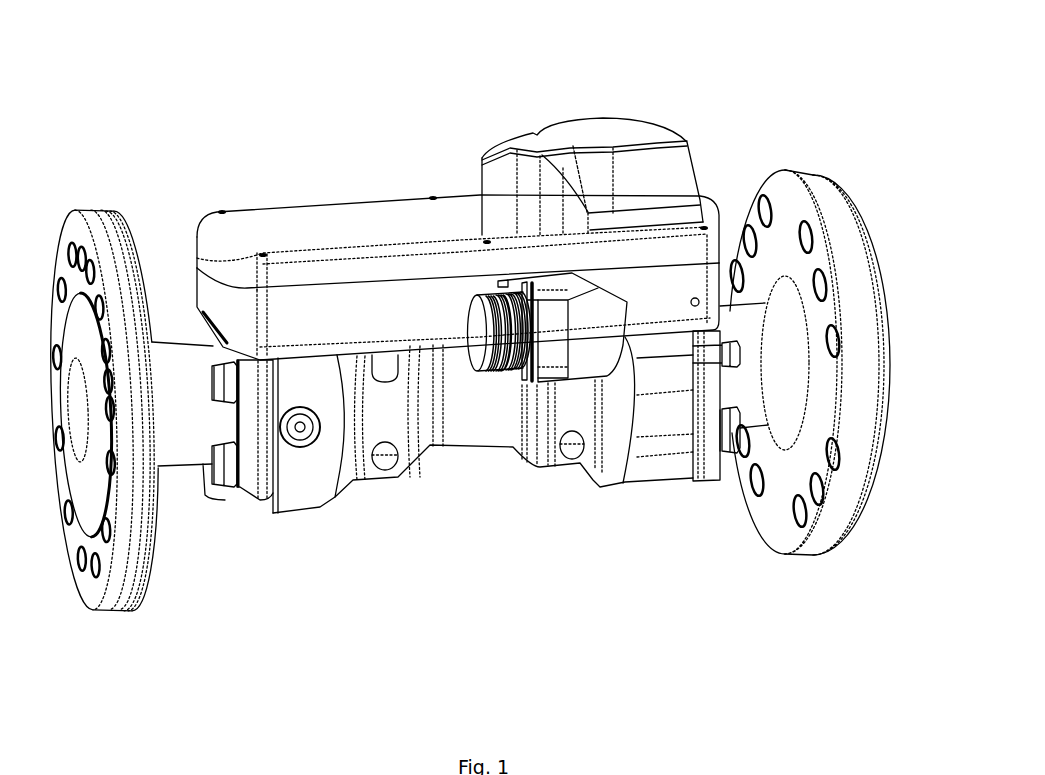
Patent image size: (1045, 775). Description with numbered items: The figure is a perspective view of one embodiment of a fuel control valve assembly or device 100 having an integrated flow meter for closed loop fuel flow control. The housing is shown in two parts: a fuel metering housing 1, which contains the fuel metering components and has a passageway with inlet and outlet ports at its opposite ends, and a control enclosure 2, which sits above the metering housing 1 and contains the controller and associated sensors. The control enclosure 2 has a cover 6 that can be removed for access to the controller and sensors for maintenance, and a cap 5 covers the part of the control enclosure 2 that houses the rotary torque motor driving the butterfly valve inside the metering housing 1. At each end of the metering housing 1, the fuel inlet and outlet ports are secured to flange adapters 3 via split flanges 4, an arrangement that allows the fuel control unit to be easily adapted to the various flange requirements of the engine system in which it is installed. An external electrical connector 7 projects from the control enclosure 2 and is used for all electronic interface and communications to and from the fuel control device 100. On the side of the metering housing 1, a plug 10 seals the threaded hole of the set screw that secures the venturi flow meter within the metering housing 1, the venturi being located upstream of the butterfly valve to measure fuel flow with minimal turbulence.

The fuel control valve assembly 100 is at (769, 138).
The fuel metering housing 1 is at (457, 427).
The control enclosure 2 is at (352, 310).
The flange adapter 3 is at (130, 583).
The split flange 4 is at (262, 472).
The cap 5 is at (580, 133).
The cover 6 is at (296, 222).
The electrical connector 7 is at (497, 377).
The plug 10 is at (302, 430).